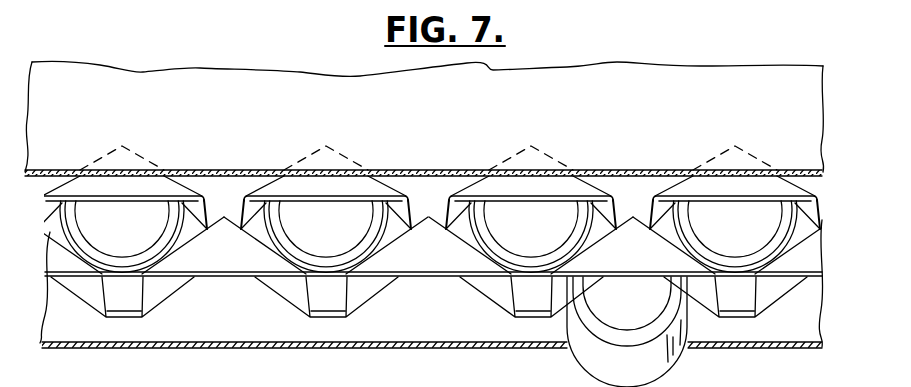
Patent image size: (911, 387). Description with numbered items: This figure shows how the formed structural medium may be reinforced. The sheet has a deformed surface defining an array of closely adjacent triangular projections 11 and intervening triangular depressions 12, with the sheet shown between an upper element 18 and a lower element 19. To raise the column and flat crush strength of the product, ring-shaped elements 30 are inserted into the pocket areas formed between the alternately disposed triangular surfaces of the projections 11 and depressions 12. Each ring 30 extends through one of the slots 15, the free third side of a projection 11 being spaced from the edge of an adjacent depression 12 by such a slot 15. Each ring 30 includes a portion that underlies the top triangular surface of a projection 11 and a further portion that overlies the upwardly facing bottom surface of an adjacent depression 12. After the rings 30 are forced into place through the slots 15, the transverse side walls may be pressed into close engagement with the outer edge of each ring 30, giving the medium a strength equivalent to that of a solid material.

The upper sheet 18 is at (230, 78).
The lower sheet 19 is at (103, 331).
The projection 11 is at (553, 193).
The slot 15 is at (399, 215).
The ring-shaped element 30 is at (283, 228).
The depression 12 is at (527, 293).